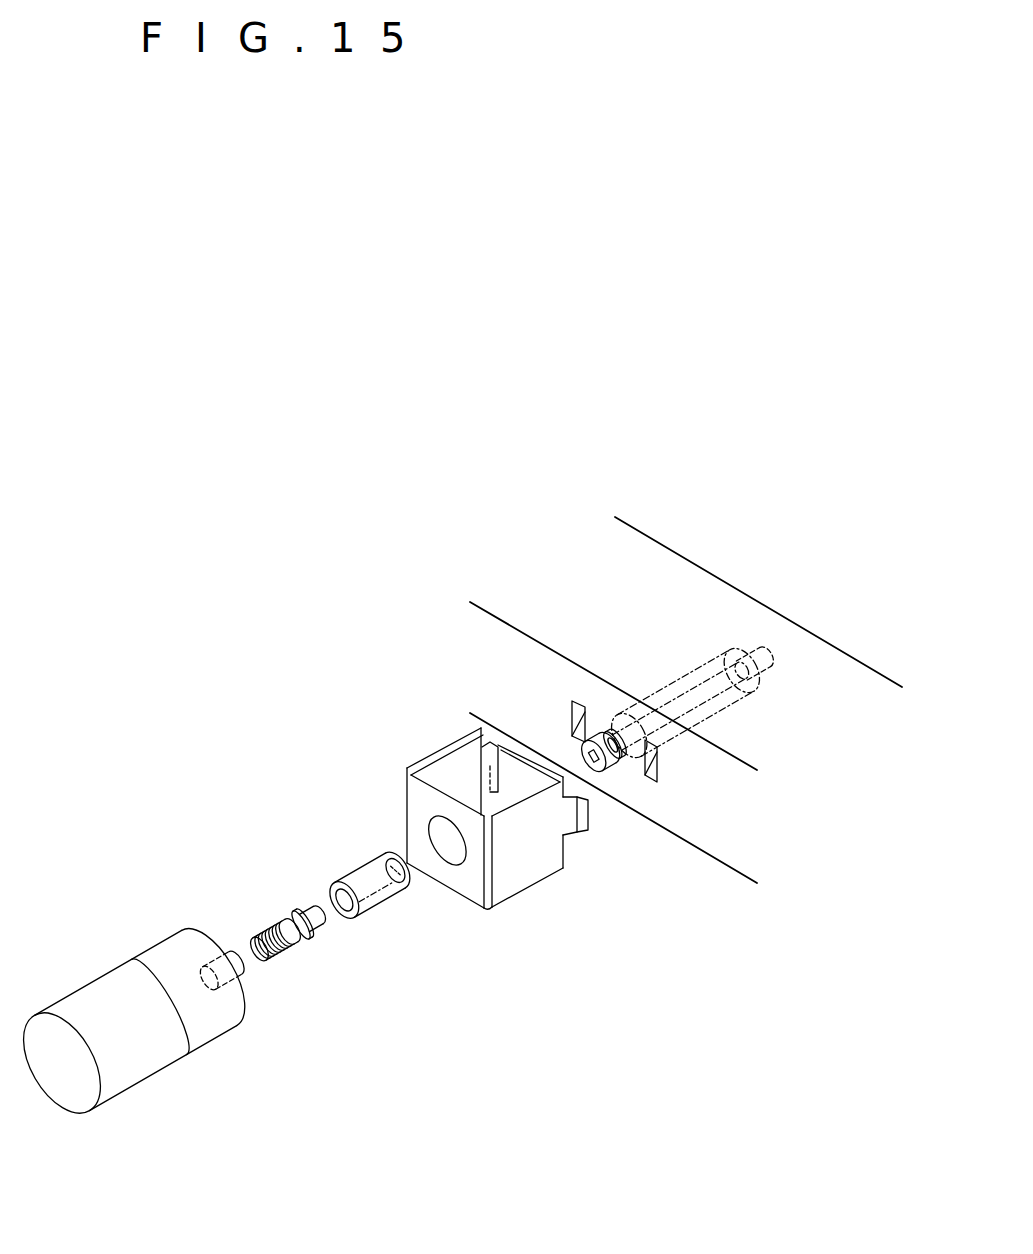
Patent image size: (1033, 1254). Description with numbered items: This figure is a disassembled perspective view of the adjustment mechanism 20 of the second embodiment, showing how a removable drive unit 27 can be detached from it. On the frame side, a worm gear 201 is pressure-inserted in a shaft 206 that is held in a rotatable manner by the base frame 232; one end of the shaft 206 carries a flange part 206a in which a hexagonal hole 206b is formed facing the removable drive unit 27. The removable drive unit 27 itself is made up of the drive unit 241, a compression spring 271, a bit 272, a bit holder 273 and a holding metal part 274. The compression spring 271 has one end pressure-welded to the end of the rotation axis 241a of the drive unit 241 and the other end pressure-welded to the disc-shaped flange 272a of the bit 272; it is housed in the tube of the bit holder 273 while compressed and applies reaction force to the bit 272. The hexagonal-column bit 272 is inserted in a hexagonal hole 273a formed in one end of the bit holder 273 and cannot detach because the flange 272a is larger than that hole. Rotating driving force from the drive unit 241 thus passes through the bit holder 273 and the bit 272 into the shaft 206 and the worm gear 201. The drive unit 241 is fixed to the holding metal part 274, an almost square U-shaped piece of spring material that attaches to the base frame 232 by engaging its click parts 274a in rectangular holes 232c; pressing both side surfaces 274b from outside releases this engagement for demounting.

The adjustment mechanism 20 is at (660, 648).
The removable drive unit 27 is at (400, 1023).
The worm gear 201 is at (693, 657).
The shaft 206 is at (768, 647).
The flange part 206a is at (627, 762).
The hexagonal hole 206b is at (594, 765).
The base frame 232 is at (725, 817).
The rectangular holes 232c is at (650, 753).
The drive unit 241 is at (152, 1062).
The rotation axis 241a is at (246, 972).
The compression spring 271 is at (262, 934).
The bit 272 is at (323, 923).
The flange 272a is at (296, 913).
The bit holder 273 is at (347, 857).
The hexagonal hole 273a is at (410, 874).
The holding metal part 274 is at (508, 873).
The click parts 274a is at (497, 745).
The side surfaces 274b is at (457, 762).